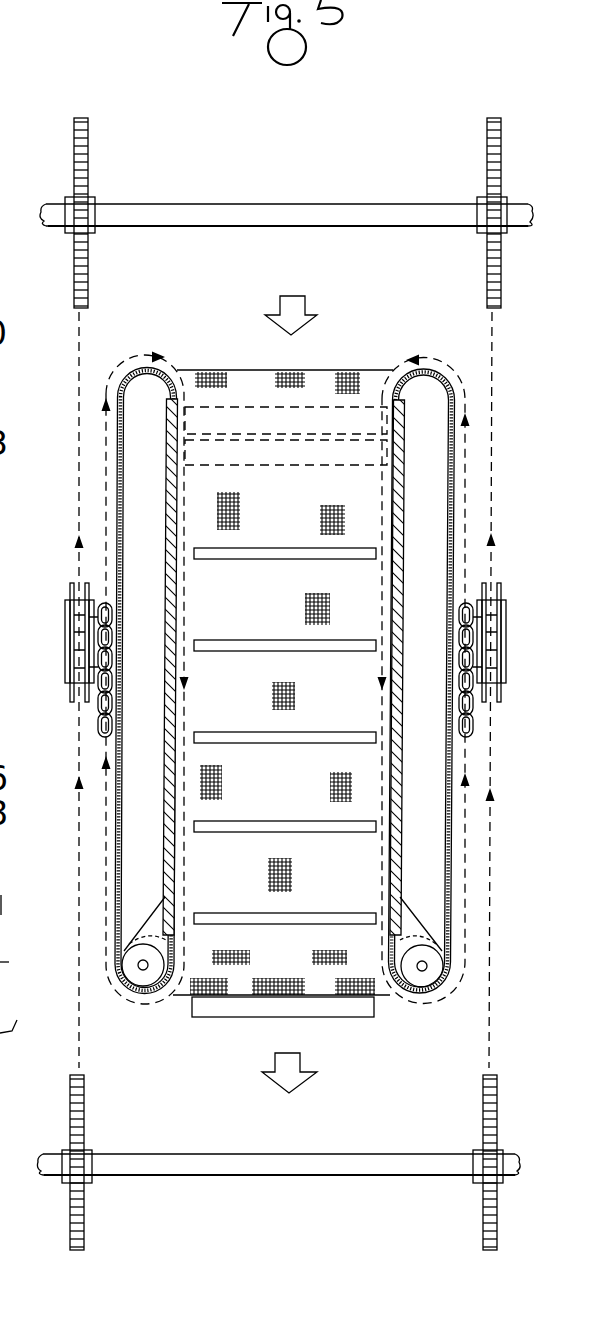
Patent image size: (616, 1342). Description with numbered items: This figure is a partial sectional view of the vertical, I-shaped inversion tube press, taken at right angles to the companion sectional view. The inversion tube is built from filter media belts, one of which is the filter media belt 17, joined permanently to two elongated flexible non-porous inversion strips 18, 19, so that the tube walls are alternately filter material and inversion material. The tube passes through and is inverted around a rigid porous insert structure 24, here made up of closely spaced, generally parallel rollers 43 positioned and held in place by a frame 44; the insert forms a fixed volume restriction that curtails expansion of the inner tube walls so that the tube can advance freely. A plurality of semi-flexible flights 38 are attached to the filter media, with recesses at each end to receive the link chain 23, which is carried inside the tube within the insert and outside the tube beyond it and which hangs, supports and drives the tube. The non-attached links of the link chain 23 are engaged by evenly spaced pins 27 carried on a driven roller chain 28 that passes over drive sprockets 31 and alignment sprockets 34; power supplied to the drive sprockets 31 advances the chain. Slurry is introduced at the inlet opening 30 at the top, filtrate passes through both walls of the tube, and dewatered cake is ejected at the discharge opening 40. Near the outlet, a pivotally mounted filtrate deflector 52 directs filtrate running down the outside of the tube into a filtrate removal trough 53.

The filter media belt 17 is at (215, 370).
The inversion strip 18 is at (110, 678).
The inversion strip 19 is at (455, 498).
The link chain 23 is at (112, 617).
The insert structure 24 is at (166, 867).
The pin 27 is at (95, 605).
The roller chain 28 is at (65, 610).
The inlet opening 30 is at (253, 367).
The drive sprocket 31 is at (88, 150).
The alignment sprocket 34 is at (84, 1232).
The flight 38 is at (280, 552).
The discharge opening 40 is at (238, 1022).
The roller 43 is at (360, 445).
The frame 44 is at (166, 848).
The filtrate deflector 52 is at (19, 960).
The filtrate removal trough 53 is at (14, 1051).